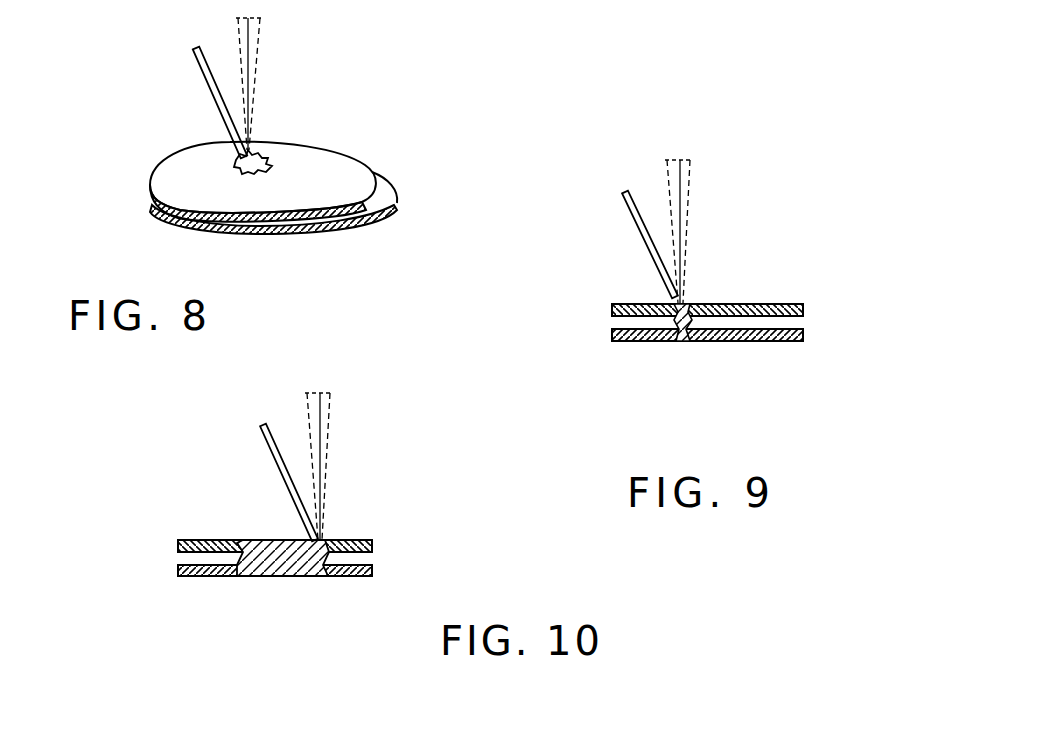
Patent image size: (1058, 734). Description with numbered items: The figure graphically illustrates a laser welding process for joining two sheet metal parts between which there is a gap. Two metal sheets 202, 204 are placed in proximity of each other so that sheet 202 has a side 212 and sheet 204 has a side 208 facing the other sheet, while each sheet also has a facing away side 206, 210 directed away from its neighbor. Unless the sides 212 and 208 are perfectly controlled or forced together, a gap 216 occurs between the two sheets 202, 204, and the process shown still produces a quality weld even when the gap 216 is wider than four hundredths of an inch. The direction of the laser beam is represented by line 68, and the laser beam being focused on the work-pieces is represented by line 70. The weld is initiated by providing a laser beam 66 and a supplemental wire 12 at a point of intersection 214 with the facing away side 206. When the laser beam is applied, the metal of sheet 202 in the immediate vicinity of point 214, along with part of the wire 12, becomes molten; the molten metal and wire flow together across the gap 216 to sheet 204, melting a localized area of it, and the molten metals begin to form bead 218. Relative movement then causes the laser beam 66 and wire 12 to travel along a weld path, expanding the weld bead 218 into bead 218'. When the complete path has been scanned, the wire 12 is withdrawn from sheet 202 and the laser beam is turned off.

In FIG. 8, the wire 12 is at (207, 88).
In FIG. 9, the wire 12 is at (650, 253).
In FIG. 10, the wire 12 is at (290, 488).
In FIG. 8, the laser beam 66 is at (280, 77).
In FIG. 9, the laser beam 66 is at (710, 242).
In FIG. 10, the laser beam 66 is at (349, 477).
In FIG. 8, the line representing direction of laser beam 68 is at (250, 57).
In FIG. 9, the line representing direction of laser beam 68 is at (680, 208).
In FIG. 10, the line representing direction of laser beam 68 is at (321, 442).
In FIG. 8, the line representing focused laser beam 70 is at (259, 42).
In FIG. 9, the line representing focused laser beam 70 is at (686, 163).
In FIG. 10, the line representing focused laser beam 70 is at (326, 396).
In FIG. 8, the metal sheet 202 is at (167, 172).
In FIG. 9, the metal sheet 202 is at (612, 312).
In FIG. 10, the metal sheet 202 is at (178, 547).
In FIG. 8, the metal sheet 204 is at (393, 217).
In FIG. 9, the metal sheet 204 is at (795, 342).
In FIG. 10, the metal sheet 204 is at (363, 576).
In FIG. 8, the facing away side 206 is at (333, 165).
In FIG. 9, the facing away side 206 is at (780, 303).
In FIG. 10, the facing away side 206 is at (348, 540).
In FIG. 8, the side facing the other sheet 208 is at (383, 192).
In FIG. 9, the side facing the other sheet 208 is at (803, 325).
In FIG. 10, the side facing the other sheet 208 is at (368, 560).
In FIG. 8, the facing away side 210 is at (280, 235).
In FIG. 9, the facing away side 210 is at (730, 342).
In FIG. 10, the facing away side 210 is at (293, 576).
In FIG. 9, the side facing the other sheet 212 is at (803, 316).
In FIG. 10, the side facing the other sheet 212 is at (370, 552).
In FIG. 8, the point of intersection 214 is at (262, 158).
In FIG. 9, the point of intersection 214 is at (685, 297).
In FIG. 9, the gap 216 is at (617, 322).
In FIG. 10, the gap 216 is at (180, 558).
In FIG. 9, the bead 218 is at (663, 359).
In FIG. 10, the bead 218' is at (262, 595).